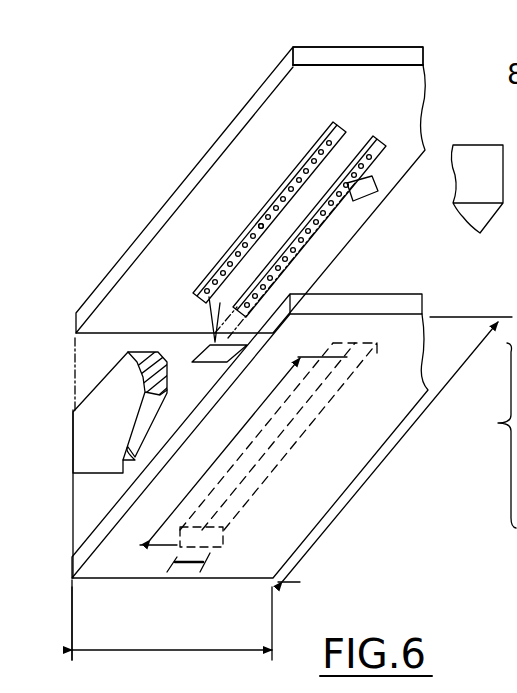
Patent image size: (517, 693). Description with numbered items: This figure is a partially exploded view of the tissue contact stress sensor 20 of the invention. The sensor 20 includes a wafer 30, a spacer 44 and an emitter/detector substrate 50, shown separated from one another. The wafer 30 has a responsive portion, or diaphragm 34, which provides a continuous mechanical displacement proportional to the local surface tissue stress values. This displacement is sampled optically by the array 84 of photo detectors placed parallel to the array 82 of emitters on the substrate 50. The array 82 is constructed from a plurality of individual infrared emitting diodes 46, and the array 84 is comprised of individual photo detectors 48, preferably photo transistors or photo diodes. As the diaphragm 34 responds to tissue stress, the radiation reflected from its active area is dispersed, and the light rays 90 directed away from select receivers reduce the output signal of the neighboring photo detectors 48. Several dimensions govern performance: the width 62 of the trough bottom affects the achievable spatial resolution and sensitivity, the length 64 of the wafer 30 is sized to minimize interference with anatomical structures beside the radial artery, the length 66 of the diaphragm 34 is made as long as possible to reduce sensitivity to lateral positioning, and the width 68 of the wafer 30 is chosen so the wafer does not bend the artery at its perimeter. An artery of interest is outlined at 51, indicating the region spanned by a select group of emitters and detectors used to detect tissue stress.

The sensor 20 is at (130, 185).
The emitter/detector substrate 50 is at (365, 47).
The array of emitters 82 is at (278, 176).
The infrared emitting diode 46 is at (262, 227).
The array of photo detectors 84 is at (383, 165).
The photo detector 48 is at (352, 194).
The light rays 90 is at (209, 300).
The wafer 30 is at (145, 588).
The responsive portion (diaphragm) 34 is at (377, 343).
The length of diaphragm 66 is at (224, 453).
The width of trough bottom 62 is at (188, 565).
The spacer 44 is at (455, 218).
The length of wafer 64 is at (400, 440).
The artery outline 51 is at (490, 423).
The width of wafer 68 is at (167, 653).